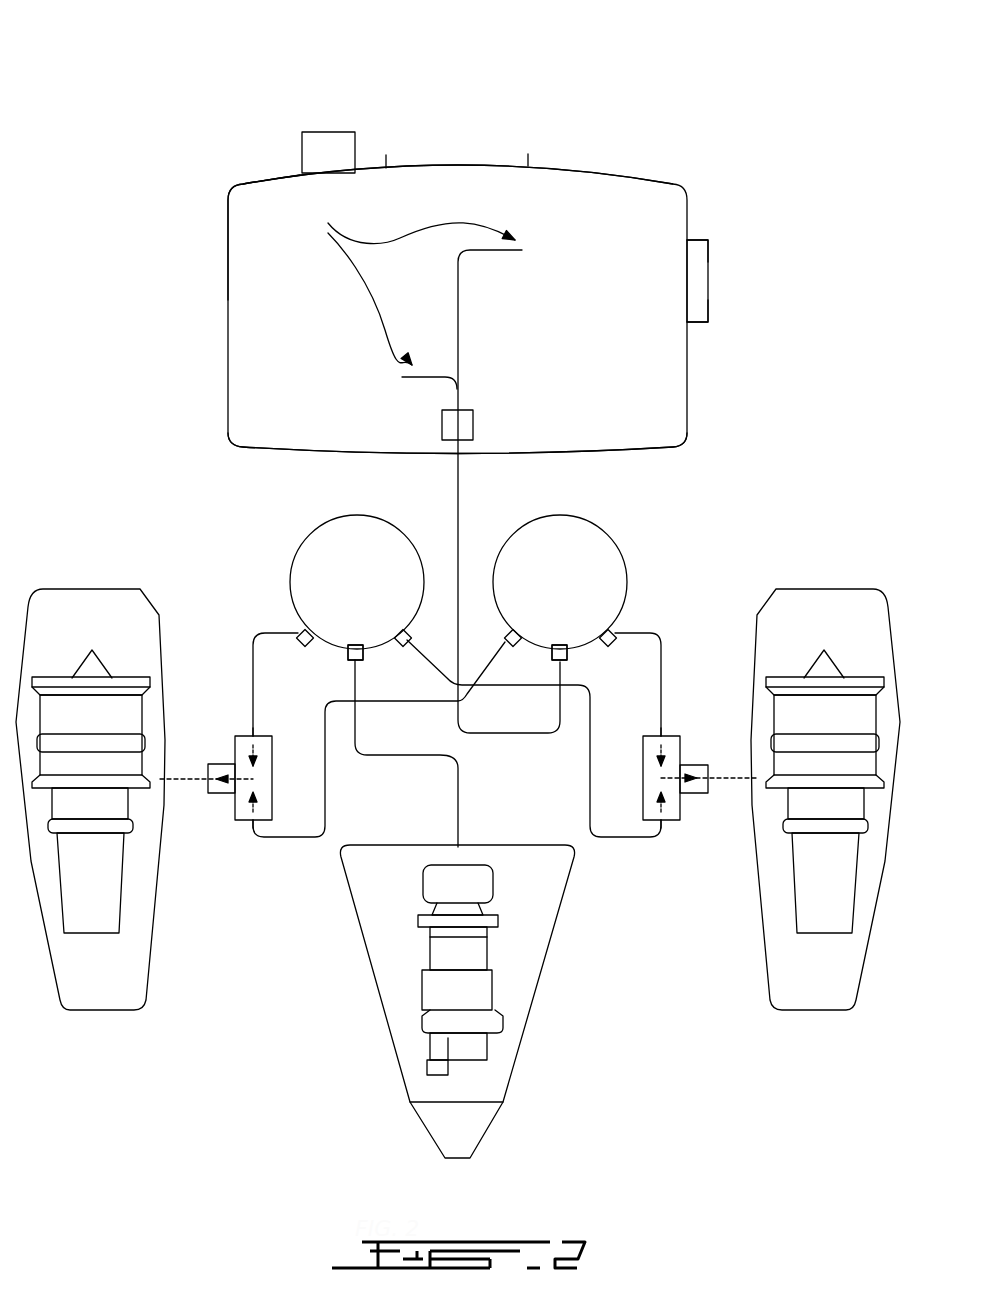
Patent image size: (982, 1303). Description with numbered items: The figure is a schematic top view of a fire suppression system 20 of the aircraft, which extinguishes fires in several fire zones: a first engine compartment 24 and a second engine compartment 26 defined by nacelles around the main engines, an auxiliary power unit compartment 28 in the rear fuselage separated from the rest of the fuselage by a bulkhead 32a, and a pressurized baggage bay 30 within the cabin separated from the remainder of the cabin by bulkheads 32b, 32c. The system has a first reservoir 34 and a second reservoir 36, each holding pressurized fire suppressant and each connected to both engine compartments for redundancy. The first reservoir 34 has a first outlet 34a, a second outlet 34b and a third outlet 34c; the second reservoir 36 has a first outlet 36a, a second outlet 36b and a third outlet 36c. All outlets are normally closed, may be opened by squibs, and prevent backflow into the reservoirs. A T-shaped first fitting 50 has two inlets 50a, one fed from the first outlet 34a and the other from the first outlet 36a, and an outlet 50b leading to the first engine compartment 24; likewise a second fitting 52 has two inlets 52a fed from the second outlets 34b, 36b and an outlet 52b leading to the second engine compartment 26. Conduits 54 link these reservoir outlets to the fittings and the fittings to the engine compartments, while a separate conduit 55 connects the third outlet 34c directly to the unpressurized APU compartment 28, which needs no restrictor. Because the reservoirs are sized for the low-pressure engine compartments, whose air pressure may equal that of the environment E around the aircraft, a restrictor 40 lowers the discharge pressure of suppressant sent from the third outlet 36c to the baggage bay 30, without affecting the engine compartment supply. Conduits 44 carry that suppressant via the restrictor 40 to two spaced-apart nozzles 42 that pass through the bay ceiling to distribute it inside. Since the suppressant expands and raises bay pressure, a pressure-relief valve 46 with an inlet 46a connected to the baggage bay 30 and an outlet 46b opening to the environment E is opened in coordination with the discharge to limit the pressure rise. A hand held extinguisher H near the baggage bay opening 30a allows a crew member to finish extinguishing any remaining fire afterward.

The fire suppression system 20 is at (172, 157).
The first engine compartment 24 is at (148, 990).
The second engine compartment 26 is at (883, 887).
The auxiliary power unit compartment 28 is at (516, 1066).
The baggage bay 30 is at (632, 172).
The baggage bay opening 30a is at (477, 150).
The bulkhead 32a is at (520, 845).
The bulkhead 32b is at (637, 450).
The bulkhead 32c is at (272, 176).
The first reservoir 34 is at (372, 596).
The first outlet of first reservoir 34a is at (303, 648).
The second outlet of first reservoir 34b is at (410, 632).
The third outlet of first reservoir 34c is at (363, 655).
The second reservoir 36 is at (575, 596).
The first outlet of second reservoir 36a is at (510, 632).
The second outlet of second reservoir 36b is at (612, 632).
The third outlet of second reservoir 36c is at (568, 655).
The restrictor 40 is at (442, 422).
The nozzles 42 is at (405, 290).
The conduits 44 is at (458, 328).
The pressure-relief valve 46 is at (720, 222).
The inlet of pressure-relief valve 46a is at (676, 296).
The outlet of pressure-relief valve 46b is at (730, 288).
The first fitting 50 is at (219, 818).
The inlets of first fitting 50a is at (244, 734).
The outlet of first fitting 50b is at (207, 764).
The second fitting 52 is at (696, 828).
The inlets of second fitting 52a is at (663, 734).
The outlet of second fitting 52b is at (706, 763).
The conduits 54 is at (276, 633).
The conduit 55 is at (387, 753).
The hand held extinguisher H is at (330, 132).
The environment E is at (889, 394).